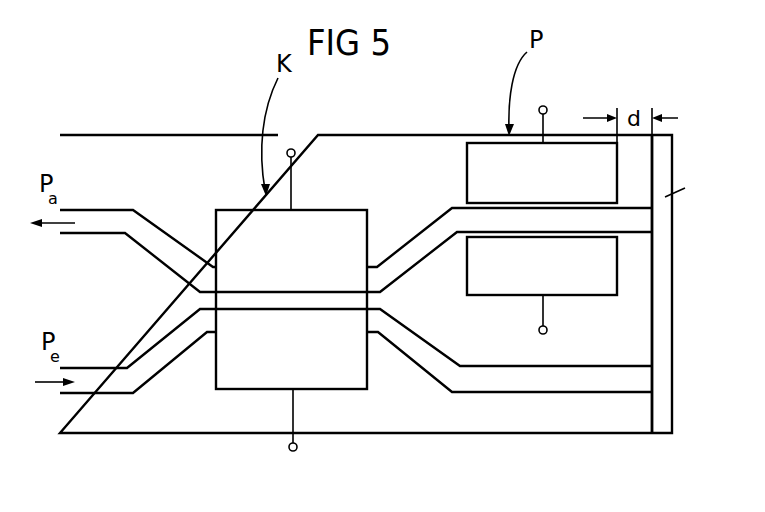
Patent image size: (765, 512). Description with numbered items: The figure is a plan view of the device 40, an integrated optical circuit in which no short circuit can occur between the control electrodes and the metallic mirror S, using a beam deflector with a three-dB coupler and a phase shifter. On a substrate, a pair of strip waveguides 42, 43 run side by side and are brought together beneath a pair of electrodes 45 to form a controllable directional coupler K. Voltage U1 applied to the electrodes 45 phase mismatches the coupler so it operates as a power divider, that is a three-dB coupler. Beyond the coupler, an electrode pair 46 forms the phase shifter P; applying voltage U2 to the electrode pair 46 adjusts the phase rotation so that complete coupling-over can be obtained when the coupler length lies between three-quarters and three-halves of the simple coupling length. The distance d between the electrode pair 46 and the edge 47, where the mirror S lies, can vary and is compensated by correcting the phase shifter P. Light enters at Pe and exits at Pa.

The device 40 is at (146, 124).
The strip waveguide 42 is at (102, 373).
The strip waveguide 43 is at (110, 218).
The pair of electrodes 45 is at (347, 218).
The electrode pair 46 is at (471, 151).
The edge 47 is at (653, 333).